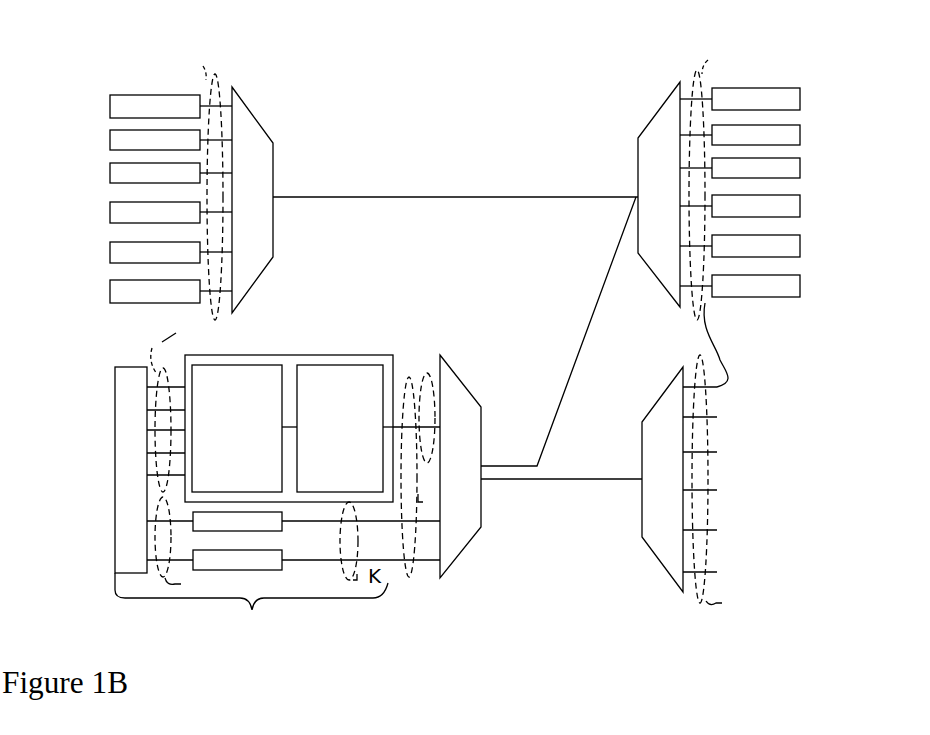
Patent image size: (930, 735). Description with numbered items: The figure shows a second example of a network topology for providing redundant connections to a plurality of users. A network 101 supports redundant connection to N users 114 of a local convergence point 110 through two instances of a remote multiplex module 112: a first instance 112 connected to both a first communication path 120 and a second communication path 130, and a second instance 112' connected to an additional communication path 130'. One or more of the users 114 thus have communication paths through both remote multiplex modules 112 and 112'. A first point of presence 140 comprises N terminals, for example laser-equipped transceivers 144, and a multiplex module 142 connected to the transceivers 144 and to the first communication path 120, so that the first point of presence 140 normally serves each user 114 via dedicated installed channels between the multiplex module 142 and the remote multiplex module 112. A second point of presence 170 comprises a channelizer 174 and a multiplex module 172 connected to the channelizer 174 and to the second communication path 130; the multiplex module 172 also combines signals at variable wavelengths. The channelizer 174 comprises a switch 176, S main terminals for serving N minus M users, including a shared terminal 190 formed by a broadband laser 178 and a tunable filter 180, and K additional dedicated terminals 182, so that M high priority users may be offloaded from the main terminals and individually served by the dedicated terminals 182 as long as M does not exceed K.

The network 101 is at (452, 50).
The local convergence point 110 is at (765, 45).
The remote multiplex module 112 is at (641, 194).
The remote multiplex module 112' is at (671, 457).
The users 114 is at (800, 99).
The first communication path 120 is at (472, 197).
The second communication path 130 is at (559, 331).
The additional communication path 130' is at (561, 458).
The first point of presence 140 is at (243, 66).
The multiplex module 142 is at (257, 124).
The transceivers 144 is at (110, 106).
The second point of presence 170 is at (422, 296).
The multiplex module 172 is at (466, 392).
The channelizer 174 is at (251, 610).
The switch 176 is at (113, 464).
The broadband laser 178 is at (223, 364).
The tunable filter 180 is at (316, 361).
The dedicated terminals 182 is at (283, 506).
The shared terminal 190 is at (362, 353).